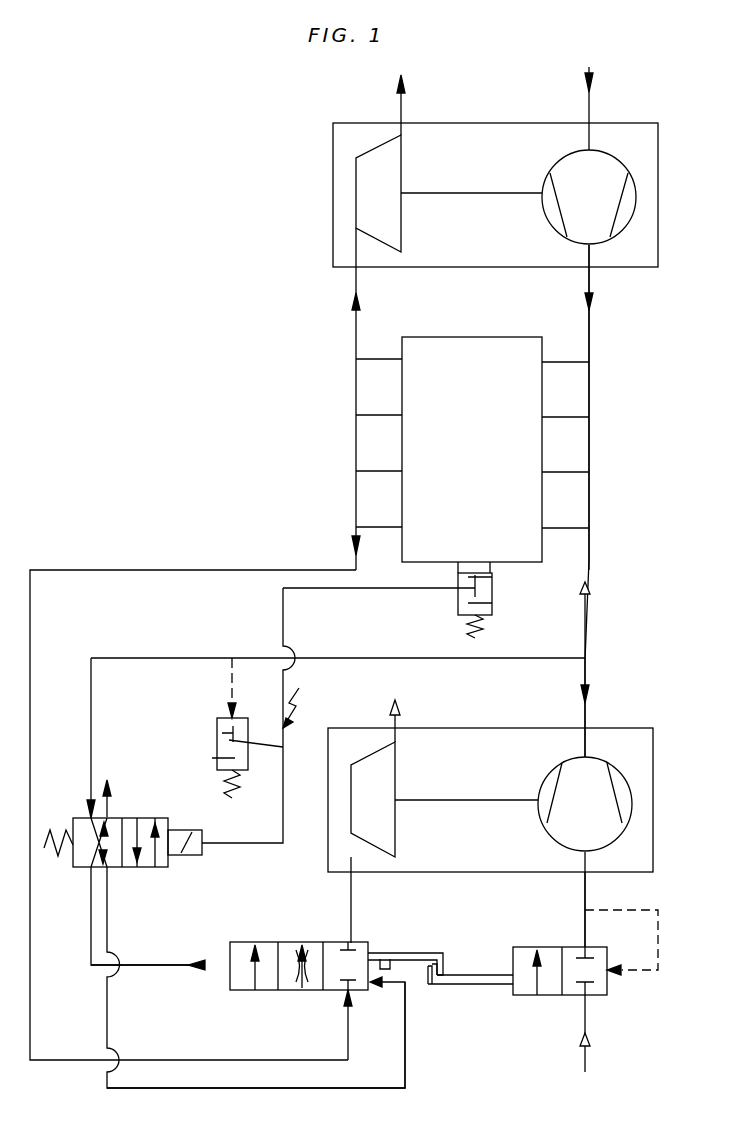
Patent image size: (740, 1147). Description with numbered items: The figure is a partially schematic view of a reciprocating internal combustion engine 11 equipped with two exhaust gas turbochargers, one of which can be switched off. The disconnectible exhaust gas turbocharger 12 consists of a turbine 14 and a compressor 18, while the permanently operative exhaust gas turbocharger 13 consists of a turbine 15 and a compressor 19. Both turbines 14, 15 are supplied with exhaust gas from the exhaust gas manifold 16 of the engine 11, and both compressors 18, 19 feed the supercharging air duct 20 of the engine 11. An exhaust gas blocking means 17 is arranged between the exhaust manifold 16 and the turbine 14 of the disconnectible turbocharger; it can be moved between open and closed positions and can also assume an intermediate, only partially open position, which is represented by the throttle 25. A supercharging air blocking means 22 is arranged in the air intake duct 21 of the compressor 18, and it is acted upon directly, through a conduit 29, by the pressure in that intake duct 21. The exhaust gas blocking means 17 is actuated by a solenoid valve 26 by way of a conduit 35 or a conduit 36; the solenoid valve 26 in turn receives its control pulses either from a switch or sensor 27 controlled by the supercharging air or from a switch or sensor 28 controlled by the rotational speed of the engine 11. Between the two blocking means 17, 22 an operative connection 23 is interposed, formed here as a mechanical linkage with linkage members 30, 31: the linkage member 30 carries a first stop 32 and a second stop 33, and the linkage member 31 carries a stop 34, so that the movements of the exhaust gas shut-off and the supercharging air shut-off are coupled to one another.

The reciprocating internal combustion engine 11 is at (457, 449).
The disconnectible exhaust gas turbocharger 12 is at (461, 770).
The permanently operative exhaust gas turbocharger 13 is at (475, 172).
The turbine 14 is at (361, 810).
The turbine 15 is at (364, 204).
The exhaust gas manifold 16 is at (355, 440).
The exhaust gas blocking means 17 is at (230, 1000).
The compressor 18 is at (573, 815).
The compressor 19 is at (577, 207).
The supercharging air duct 20 is at (591, 442).
The air intake duct 21 is at (588, 896).
The supercharging air blocking means 22 is at (553, 1005).
The operative connection 23 is at (455, 945).
The throttle 25 is at (297, 984).
The solenoid valve 26 is at (140, 806).
The switch or sensor 27 is at (217, 742).
The switch or sensor 28 is at (458, 601).
The conduit 29 is at (660, 947).
The linkage member 30 is at (402, 952).
The linkage member 31 is at (480, 975).
The first stop 32 is at (396, 982).
The second stop 33 is at (445, 972).
The stop 34 is at (423, 981).
The conduit 35 is at (410, 1072).
The conduit 36 is at (168, 964).